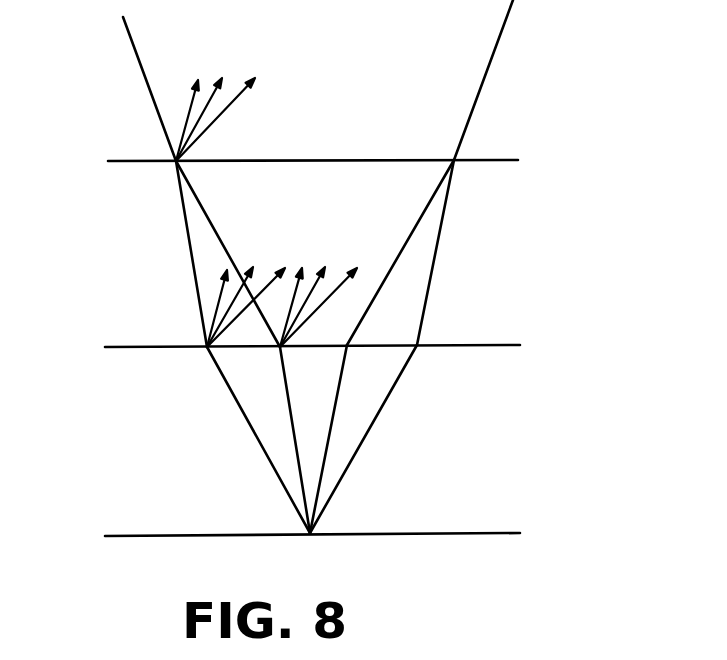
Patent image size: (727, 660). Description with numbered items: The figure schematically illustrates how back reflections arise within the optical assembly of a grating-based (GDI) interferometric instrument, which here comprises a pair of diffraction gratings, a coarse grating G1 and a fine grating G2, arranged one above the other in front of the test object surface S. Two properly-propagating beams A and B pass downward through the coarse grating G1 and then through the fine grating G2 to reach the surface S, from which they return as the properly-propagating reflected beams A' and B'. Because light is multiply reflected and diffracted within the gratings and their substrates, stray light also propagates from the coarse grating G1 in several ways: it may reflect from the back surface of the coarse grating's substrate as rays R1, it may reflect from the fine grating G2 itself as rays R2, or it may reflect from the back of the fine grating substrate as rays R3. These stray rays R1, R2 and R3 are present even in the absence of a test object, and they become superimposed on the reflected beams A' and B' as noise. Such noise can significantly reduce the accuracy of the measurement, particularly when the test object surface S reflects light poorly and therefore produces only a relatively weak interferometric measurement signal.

The incident beam A is at (132, 182).
The reflected beam A' is at (465, 172).
The incident beam B is at (188, 254).
The reflected beam B' is at (453, 252).
The rays reflected from back surface of coarse grating substrate R1 is at (213, 122).
The rays reflected from fine grating R2 is at (221, 288).
The rays reflected from back of fine grating substrate R3 is at (329, 298).
The coarse grating G1 is at (518, 160).
The fine grating G2 is at (520, 345).
The test object surface S is at (515, 533).